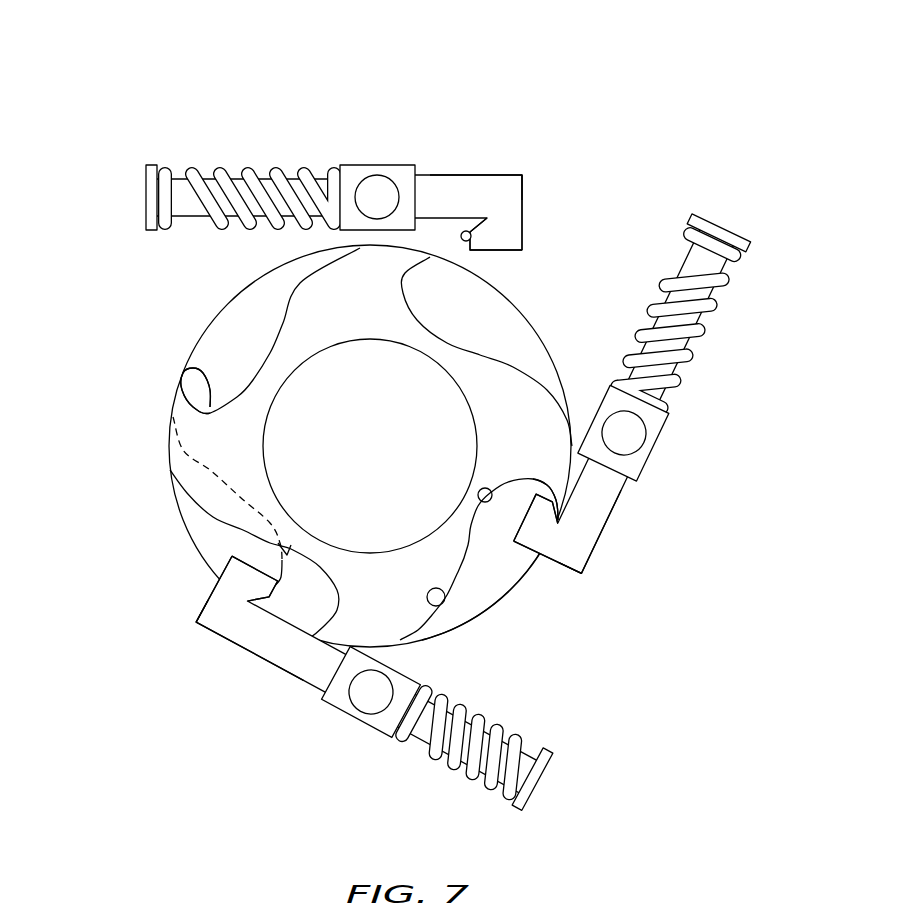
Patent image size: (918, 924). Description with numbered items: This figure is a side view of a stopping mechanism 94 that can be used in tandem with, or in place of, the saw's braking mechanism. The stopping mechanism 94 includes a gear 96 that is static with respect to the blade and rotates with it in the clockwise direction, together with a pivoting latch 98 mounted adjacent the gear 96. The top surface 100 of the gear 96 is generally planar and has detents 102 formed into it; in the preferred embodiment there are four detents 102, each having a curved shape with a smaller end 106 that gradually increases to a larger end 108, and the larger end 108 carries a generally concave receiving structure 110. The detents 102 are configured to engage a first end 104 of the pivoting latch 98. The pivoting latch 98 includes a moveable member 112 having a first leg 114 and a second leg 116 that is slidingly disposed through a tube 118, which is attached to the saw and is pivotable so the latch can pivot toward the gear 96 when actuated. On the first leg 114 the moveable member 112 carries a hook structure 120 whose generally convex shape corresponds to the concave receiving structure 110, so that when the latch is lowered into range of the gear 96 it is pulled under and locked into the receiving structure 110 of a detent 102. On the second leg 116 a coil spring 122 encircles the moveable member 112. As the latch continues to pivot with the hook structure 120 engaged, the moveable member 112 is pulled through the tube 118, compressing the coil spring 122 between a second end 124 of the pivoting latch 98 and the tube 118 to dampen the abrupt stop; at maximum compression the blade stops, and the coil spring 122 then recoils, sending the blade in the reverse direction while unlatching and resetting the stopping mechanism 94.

The stopping mechanism 94 is at (83, 71).
The gear 96 is at (177, 413).
The pivoting latch 98 is at (442, 183).
The top surface 100 is at (198, 443).
The detents 102 is at (220, 345).
The first end 104 is at (522, 198).
The smaller end 106 is at (445, 606).
The larger end 108 is at (517, 555).
The receiving structure 110 is at (195, 378).
The moveable member 112 is at (467, 180).
The first leg 114 is at (500, 178).
The second leg 116 is at (217, 188).
The tube 118 is at (367, 172).
The hook structure 120 is at (480, 228).
The coil spring 122 is at (248, 177).
The second end 124 is at (147, 192).